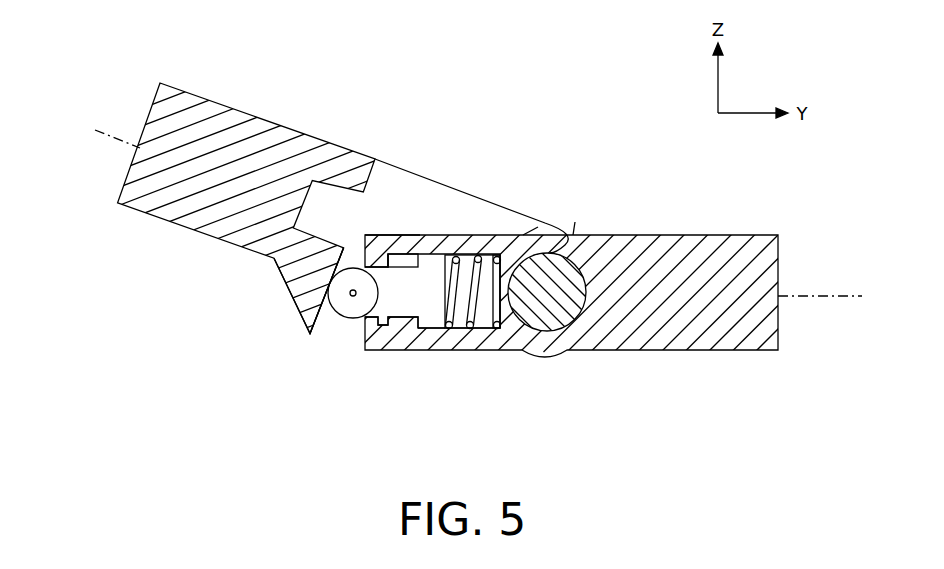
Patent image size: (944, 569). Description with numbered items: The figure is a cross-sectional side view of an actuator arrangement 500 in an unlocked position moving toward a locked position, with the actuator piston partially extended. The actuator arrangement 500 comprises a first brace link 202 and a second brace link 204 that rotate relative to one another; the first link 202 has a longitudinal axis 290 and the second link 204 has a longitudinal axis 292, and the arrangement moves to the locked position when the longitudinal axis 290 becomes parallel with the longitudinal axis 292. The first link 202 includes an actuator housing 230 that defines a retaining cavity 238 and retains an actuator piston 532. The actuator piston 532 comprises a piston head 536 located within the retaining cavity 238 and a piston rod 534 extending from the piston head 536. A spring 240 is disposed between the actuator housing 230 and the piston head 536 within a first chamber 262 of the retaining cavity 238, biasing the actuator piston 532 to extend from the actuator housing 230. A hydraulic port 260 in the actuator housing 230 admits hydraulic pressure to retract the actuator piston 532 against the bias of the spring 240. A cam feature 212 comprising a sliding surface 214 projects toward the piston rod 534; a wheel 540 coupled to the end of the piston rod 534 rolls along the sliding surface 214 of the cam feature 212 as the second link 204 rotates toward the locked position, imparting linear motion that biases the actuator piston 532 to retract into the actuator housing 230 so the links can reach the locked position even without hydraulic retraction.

The actuator arrangement 500 is at (548, 132).
The first brace link 202 is at (723, 252).
The second brace link 204 is at (167, 85).
The cam feature 212 is at (297, 323).
The sliding surface 214 is at (320, 323).
The actuator housing 230 is at (397, 233).
The retaining cavity 238 is at (474, 252).
The spring 240 is at (445, 323).
The hydraulic port 260 is at (380, 333).
The first chamber 262 is at (485, 328).
The longitudinal axis 290 is at (820, 296).
The longitudinal axis 292 is at (97, 130).
The actuator piston 532 is at (380, 275).
The piston rod 534 is at (364, 240).
The piston head 536 is at (427, 258).
The wheel 540 is at (353, 318).